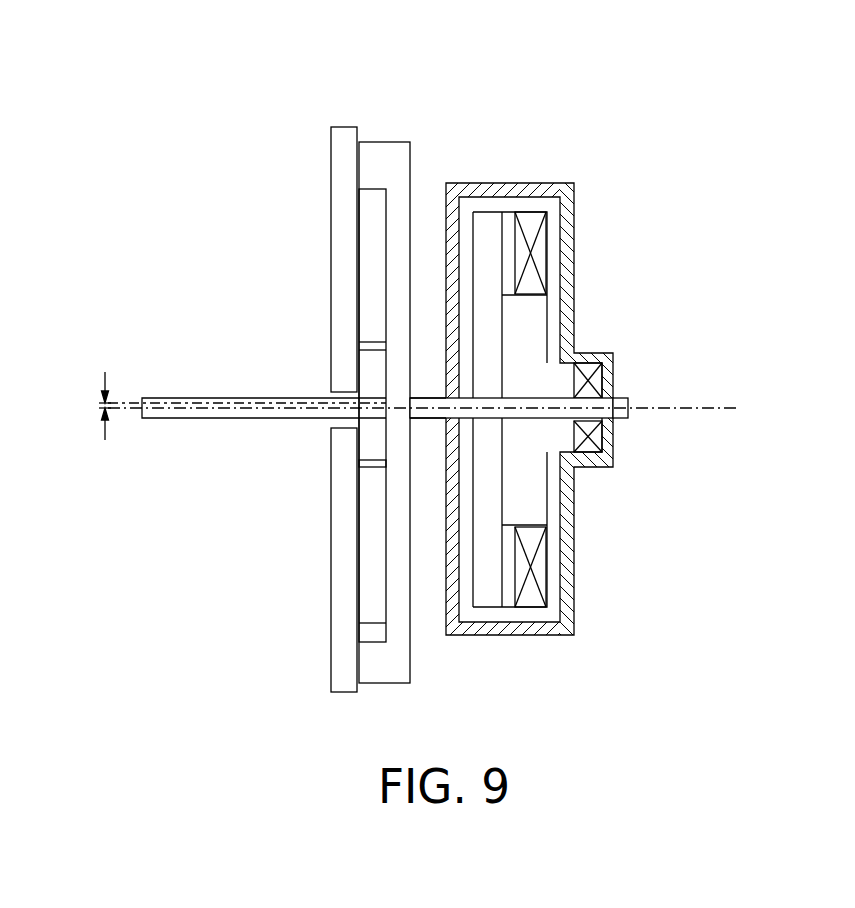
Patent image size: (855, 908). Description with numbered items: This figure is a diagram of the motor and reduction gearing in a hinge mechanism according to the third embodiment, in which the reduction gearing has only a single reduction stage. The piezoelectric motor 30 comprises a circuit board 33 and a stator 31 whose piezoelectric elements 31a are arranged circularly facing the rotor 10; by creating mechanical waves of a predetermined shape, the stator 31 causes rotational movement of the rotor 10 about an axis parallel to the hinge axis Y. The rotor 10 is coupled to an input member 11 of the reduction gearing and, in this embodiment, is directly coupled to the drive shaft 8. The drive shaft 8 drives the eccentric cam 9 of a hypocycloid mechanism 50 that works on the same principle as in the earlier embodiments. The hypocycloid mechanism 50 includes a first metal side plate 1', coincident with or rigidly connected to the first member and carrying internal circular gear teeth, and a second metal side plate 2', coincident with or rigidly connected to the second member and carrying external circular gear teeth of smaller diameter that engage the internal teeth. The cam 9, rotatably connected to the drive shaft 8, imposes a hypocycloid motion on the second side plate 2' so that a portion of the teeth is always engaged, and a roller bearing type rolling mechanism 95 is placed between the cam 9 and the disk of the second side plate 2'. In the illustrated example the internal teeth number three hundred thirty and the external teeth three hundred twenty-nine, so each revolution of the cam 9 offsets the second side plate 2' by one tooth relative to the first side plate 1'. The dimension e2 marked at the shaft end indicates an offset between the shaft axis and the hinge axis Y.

The first side plate 1' is at (311, 362).
The second side plate 2' is at (317, 412).
The drive shaft 8 is at (218, 420).
The eccentric cam 9 is at (372, 437).
The rolling mechanism 95 is at (372, 463).
The rotor 10 is at (485, 592).
The input member 11 is at (441, 393).
The piezoelectric motor 30 is at (521, 174).
The stator 31 is at (532, 220).
The piezoelectric elements 31a is at (508, 275).
The circuit board 33 is at (552, 332).
The hypocycloid mechanism 50 is at (323, 653).
The hinge axis Y is at (708, 408).
The eccentricity e2 is at (85, 406).